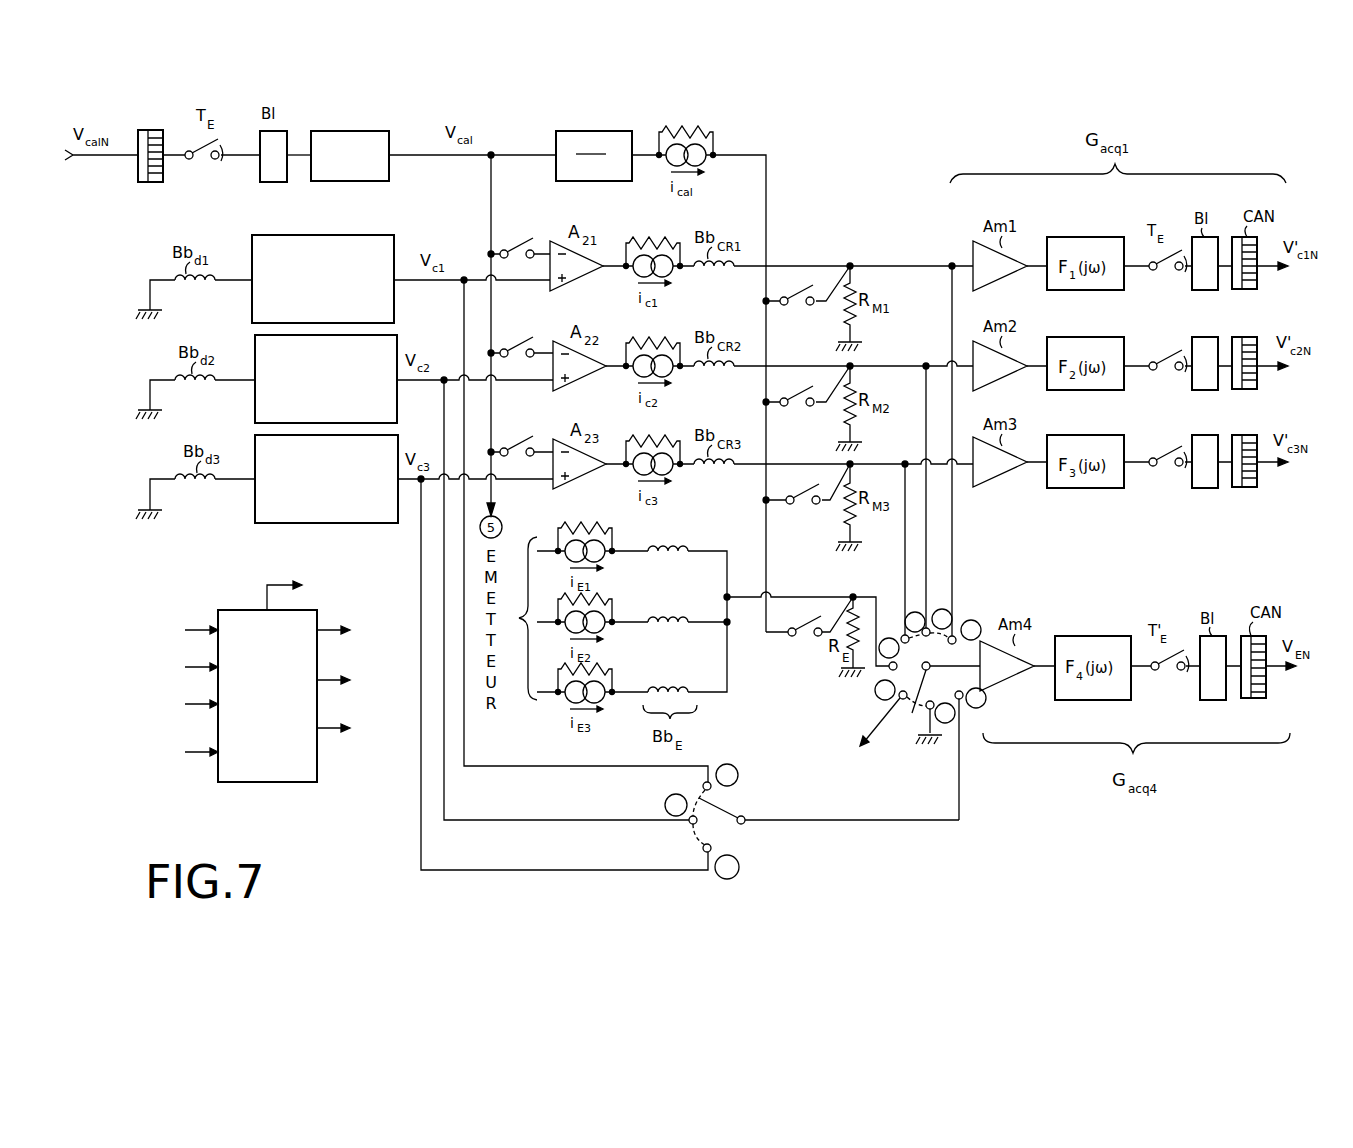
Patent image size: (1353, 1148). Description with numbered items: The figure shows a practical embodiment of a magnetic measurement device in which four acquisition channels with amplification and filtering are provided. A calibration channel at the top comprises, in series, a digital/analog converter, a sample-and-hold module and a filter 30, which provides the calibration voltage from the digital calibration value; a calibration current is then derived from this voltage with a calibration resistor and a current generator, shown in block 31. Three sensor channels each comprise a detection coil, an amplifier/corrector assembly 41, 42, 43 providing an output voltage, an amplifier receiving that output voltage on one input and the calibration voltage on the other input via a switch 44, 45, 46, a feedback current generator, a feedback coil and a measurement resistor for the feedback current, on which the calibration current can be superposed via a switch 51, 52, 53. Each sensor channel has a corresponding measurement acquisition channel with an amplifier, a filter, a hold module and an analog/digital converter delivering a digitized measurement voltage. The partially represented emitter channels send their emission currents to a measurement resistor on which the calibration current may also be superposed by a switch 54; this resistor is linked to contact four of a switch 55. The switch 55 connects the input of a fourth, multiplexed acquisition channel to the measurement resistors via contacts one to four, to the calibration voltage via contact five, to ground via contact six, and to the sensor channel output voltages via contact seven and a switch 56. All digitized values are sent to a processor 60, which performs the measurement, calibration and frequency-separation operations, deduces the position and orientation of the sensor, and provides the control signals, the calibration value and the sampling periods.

The filter 30 is at (350, 131).
The calibration conductance 1/R_cal 31 is at (593, 131).
The amplifier/corrector assembly 41 is at (344, 235).
The amplifier/corrector assembly 42 is at (385, 335).
The amplifier/corrector assembly 43 is at (365, 523).
The switch 44 is at (512, 240).
The switch 45 is at (512, 339).
The switch 46 is at (512, 438).
The switch 51 is at (804, 280).
The switch 52 is at (804, 381).
The switch 53 is at (812, 508).
The switch 54 is at (803, 639).
The switch 55 is at (984, 610).
The switch 56 is at (741, 835).
The processor 60 is at (283, 782).